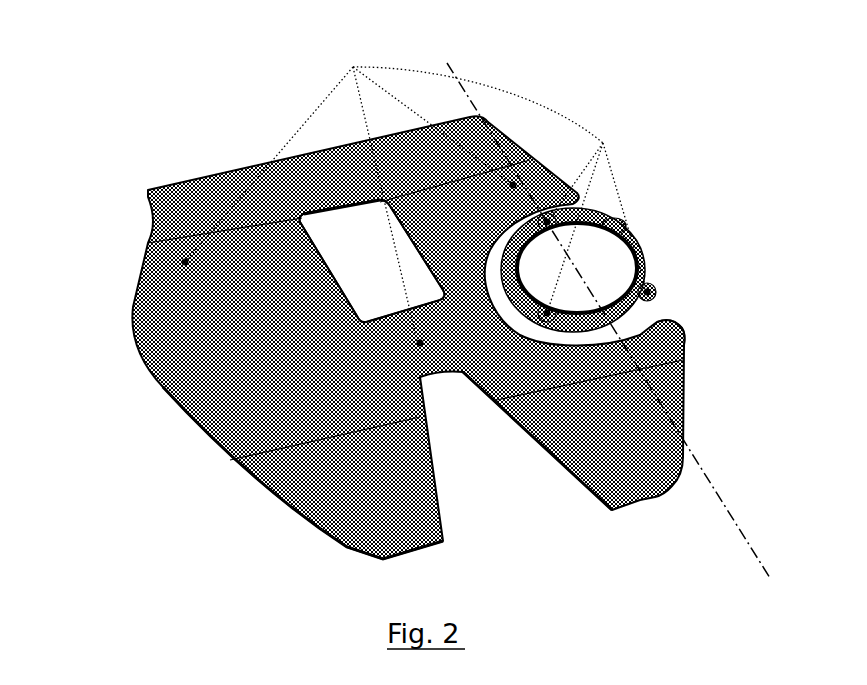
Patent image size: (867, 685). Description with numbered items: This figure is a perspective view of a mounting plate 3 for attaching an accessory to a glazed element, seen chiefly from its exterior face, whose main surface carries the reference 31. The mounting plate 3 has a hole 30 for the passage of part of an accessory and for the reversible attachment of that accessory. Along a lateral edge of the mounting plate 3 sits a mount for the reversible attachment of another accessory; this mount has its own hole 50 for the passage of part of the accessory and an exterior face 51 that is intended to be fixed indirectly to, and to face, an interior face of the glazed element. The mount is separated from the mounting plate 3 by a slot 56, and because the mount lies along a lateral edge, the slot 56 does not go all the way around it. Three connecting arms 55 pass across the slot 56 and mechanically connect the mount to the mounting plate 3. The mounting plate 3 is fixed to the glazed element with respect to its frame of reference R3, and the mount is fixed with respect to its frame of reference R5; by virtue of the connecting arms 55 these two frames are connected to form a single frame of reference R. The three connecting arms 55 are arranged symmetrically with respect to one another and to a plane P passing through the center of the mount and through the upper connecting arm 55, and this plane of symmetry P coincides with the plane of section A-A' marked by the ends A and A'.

The mounting plate 3 is at (73, 150).
The hole 30 is at (340, 232).
The main surface of panel 31 is at (254, 400).
The hole 50 is at (612, 267).
The exterior face 51 is at (634, 253).
The connecting arm 55 is at (547, 218).
The slot 56 is at (650, 315).
The frame of reference R3 is at (338, 85).
The frame of reference R5 is at (608, 168).
The single frame of reference R is at (573, 110).
The plane of symmetry P is at (737, 520).
The section line A-A' A is at (468, 49).
The section line A- A' is at (744, 492).